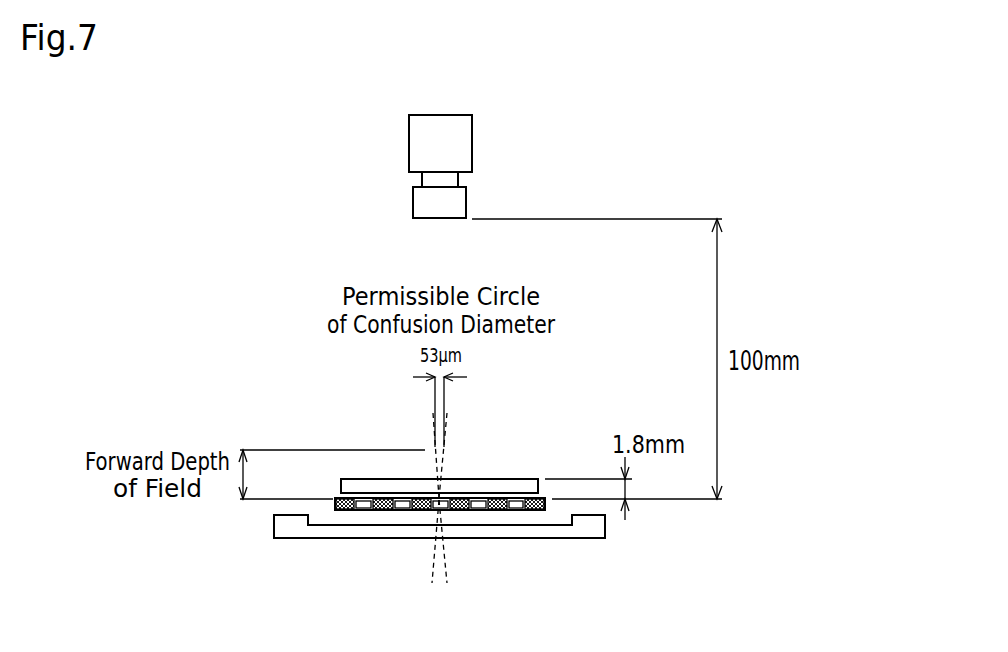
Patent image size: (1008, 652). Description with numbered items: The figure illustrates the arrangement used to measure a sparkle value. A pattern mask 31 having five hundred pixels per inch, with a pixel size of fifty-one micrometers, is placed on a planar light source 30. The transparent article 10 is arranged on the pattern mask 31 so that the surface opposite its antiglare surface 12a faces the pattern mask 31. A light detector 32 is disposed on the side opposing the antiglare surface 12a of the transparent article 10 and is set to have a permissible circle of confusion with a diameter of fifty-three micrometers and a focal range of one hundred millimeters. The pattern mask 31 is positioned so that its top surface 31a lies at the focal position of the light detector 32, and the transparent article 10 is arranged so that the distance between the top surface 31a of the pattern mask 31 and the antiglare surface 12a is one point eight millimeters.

The light detector 32 is at (472, 142).
The transparent article 10 is at (341, 485).
The antiglare surface 12a is at (492, 479).
The pattern mask 31 is at (345, 511).
The top surface 31a is at (530, 499).
The planar light source 30 is at (555, 538).